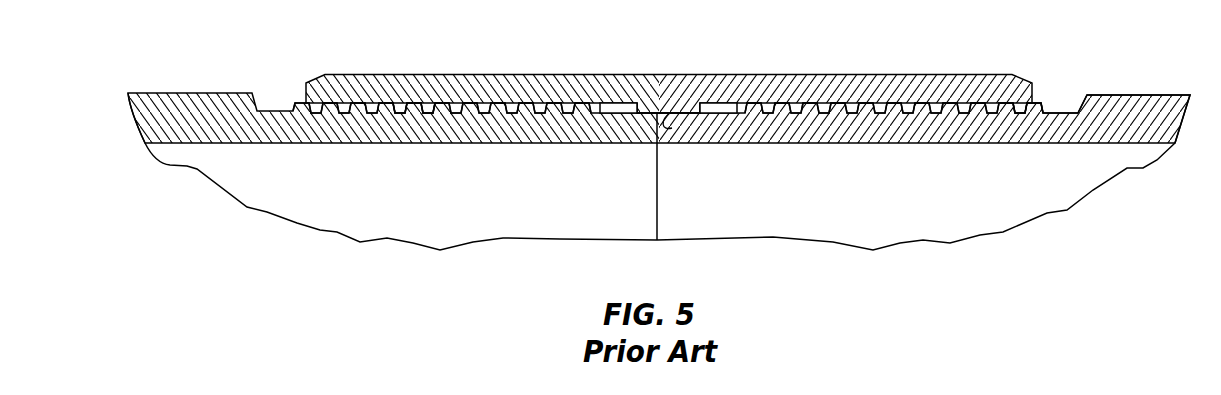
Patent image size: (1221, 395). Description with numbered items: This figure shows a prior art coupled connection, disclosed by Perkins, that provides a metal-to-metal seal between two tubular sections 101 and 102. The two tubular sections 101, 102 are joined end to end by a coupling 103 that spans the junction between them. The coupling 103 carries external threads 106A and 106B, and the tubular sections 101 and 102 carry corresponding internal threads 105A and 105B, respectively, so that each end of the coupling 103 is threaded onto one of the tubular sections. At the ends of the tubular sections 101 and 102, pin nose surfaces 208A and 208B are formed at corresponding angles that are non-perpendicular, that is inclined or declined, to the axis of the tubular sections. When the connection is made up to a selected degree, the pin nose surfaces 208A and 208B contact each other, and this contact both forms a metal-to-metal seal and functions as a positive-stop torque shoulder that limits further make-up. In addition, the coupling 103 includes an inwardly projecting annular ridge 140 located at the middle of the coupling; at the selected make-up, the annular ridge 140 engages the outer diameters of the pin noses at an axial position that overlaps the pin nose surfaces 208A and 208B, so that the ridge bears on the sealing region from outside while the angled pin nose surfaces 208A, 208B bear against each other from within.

The tubular section 101 is at (188, 93).
The tubular section 102 is at (1130, 95).
The coupling 103 is at (367, 73).
The internal thread 105A is at (427, 105).
The internal thread 105B is at (970, 105).
The external thread 106A is at (420, 113).
The external thread 106B is at (1040, 113).
The inwardly projecting annular ridge 140 is at (670, 113).
The pin nose surface 208A is at (672, 115).
The pin nose surface 208B is at (667, 117).